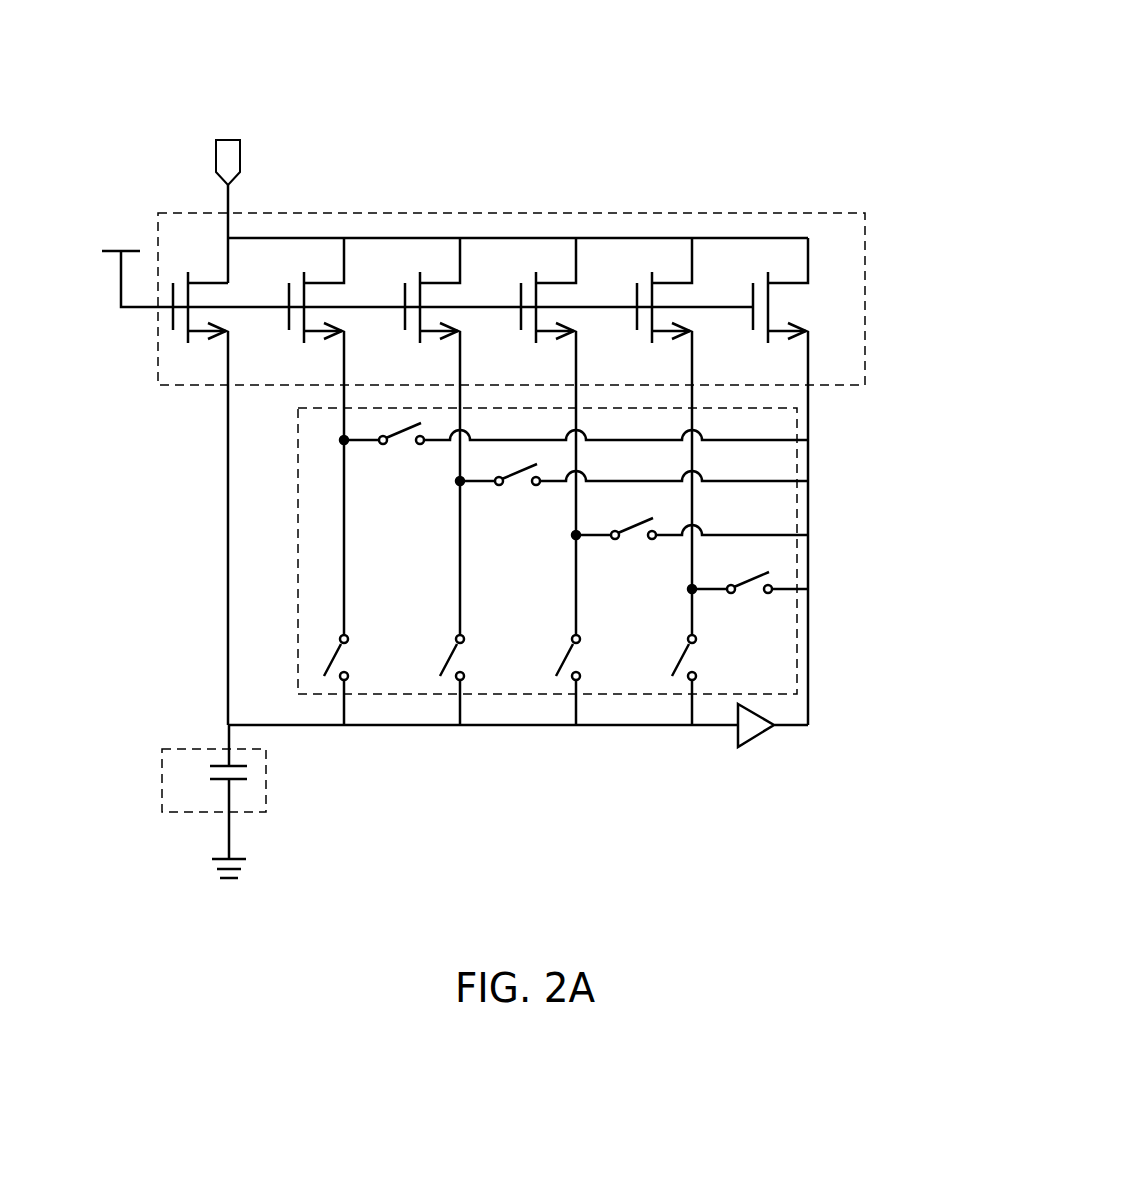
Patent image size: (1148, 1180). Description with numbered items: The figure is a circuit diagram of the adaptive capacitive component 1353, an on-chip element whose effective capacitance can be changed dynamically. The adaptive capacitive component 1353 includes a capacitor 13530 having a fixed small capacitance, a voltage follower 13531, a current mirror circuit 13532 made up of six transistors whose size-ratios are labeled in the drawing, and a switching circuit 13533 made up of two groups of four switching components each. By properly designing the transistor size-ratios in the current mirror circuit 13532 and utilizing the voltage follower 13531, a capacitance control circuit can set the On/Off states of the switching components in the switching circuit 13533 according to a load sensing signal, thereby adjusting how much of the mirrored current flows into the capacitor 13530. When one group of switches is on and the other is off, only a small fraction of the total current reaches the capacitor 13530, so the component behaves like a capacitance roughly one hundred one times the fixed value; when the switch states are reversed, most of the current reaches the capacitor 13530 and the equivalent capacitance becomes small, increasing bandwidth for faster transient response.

The adaptive capacitive component 1353 is at (718, 92).
The capacitor 13530 is at (268, 782).
The voltage follower 13531 is at (757, 738).
The current mirror circuit 13532 is at (192, 388).
The switching circuit 13533 is at (538, 695).